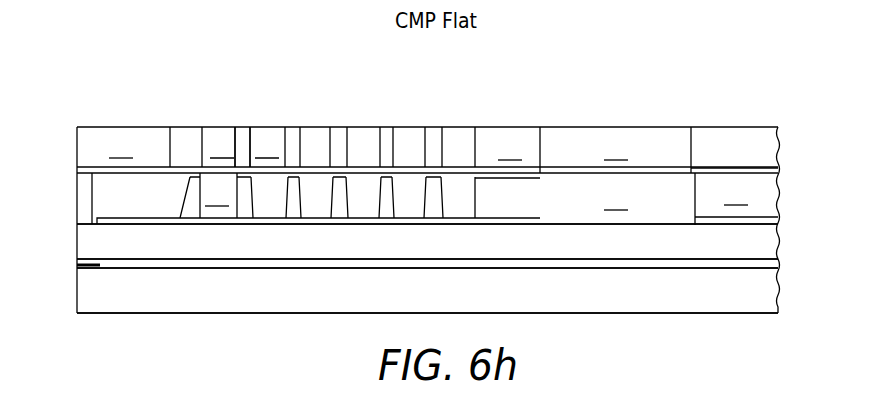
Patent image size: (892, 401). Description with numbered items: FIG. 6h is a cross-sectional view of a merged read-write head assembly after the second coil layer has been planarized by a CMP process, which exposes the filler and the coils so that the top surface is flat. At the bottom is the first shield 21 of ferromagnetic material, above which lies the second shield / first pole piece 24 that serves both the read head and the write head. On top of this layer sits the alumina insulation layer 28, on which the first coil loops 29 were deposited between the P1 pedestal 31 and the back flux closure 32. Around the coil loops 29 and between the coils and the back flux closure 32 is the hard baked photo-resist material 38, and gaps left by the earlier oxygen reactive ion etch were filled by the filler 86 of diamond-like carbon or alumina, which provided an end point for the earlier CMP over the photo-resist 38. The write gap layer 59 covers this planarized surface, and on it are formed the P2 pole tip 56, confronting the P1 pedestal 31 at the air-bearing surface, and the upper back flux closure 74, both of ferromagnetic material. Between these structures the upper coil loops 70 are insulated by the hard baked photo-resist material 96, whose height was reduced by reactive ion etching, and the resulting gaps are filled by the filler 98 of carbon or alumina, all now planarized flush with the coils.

The first shield 21 is at (780, 293).
The second shield / first pole piece 24 is at (780, 243).
The alumina insulation layer 28 is at (145, 222).
The coil loops 29 is at (218, 195).
The P1 pedestal 31 is at (77, 204).
The back flux closure 32 is at (616, 199).
The photo-resist material 38 is at (228, 345).
The P2 pole tip 56 is at (139, 147).
The write gap layer 59 is at (752, 168).
The upper coil loops 70 is at (243, 147).
The upper back flux closure 74 is at (647, 150).
The filler 86 is at (242, 170).
The photo-resist material 96 is at (264, 82).
The filler 98 is at (293, 133).